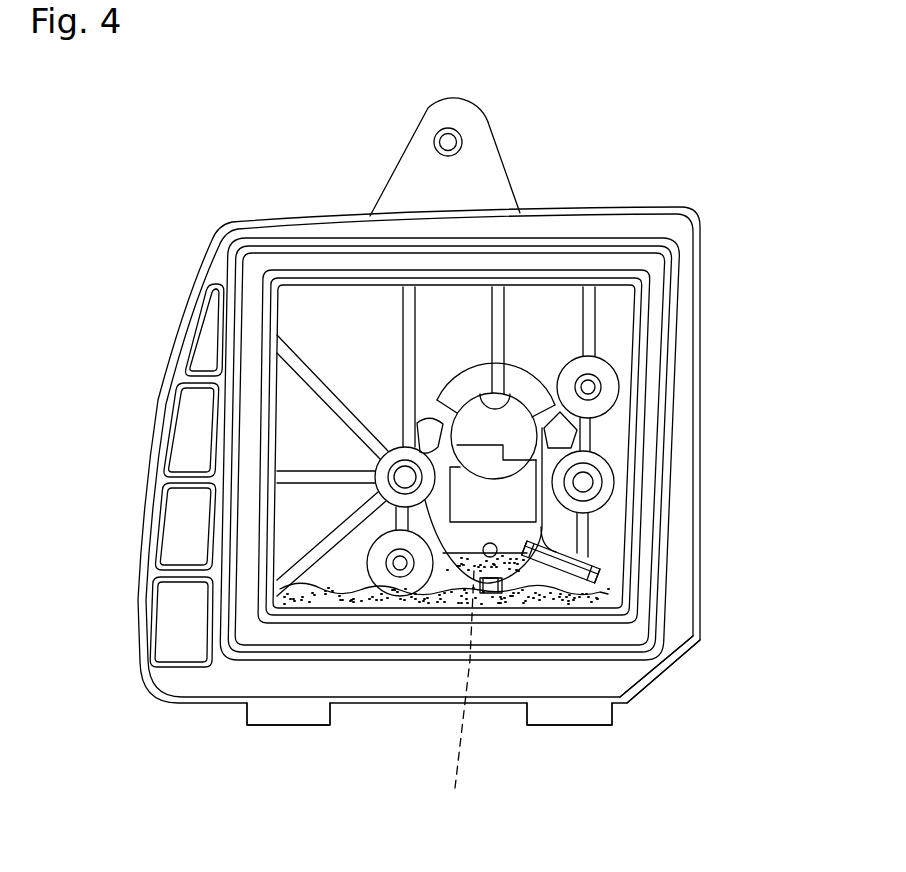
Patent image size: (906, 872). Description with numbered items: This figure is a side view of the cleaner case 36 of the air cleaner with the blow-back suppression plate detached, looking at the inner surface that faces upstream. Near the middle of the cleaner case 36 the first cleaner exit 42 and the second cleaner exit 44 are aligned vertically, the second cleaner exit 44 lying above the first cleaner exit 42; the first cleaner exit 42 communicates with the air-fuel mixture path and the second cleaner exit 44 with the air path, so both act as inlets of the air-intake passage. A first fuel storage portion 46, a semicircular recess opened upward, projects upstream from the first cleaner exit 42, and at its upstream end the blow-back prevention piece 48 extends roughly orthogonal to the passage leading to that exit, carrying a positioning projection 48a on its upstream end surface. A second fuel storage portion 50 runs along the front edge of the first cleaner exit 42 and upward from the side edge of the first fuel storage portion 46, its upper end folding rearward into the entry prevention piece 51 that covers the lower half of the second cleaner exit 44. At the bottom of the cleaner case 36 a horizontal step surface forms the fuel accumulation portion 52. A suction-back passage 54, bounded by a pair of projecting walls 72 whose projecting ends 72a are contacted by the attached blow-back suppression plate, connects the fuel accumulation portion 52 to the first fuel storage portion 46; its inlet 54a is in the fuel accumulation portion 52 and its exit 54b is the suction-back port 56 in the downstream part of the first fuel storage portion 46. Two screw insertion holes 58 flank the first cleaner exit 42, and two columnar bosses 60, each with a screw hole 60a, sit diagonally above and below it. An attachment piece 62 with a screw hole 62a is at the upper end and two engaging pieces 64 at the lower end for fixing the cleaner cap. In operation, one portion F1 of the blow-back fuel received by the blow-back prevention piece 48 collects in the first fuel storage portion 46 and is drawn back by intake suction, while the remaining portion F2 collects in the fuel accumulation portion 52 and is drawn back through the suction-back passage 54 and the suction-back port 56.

The cleaner case 36 is at (699, 211).
The first cleaner exit 42 is at (452, 425).
The second cleaner exit 44 is at (508, 400).
The first fuel storage portion 46 is at (463, 694).
The blow-back prevention piece 48 is at (345, 603).
The positioning projection 48a is at (503, 577).
The second fuel storage portion 50 is at (548, 512).
The entry prevention piece 51 is at (495, 468).
The fuel accumulation portion 52 is at (570, 640).
The suction-back passage 54 is at (575, 556).
The inlet of the suction-back passage 54a is at (585, 592).
The exit of the suction-back passage 54b is at (517, 592).
The suction-back port 56 is at (532, 708).
The screw insertion holes 58 is at (388, 490).
The columnar bosses 60 is at (372, 577).
The screw hole 60a is at (382, 566).
The attachment piece 62 is at (487, 170).
The screw hole 62a is at (463, 141).
The engaging pieces 64 is at (258, 723).
The projecting walls 72 is at (600, 562).
The projecting ends 72a is at (557, 548).
The portion of the blow-back fuel F1 is at (468, 575).
The remaining portion of the blow-back fuel F2 is at (365, 592).